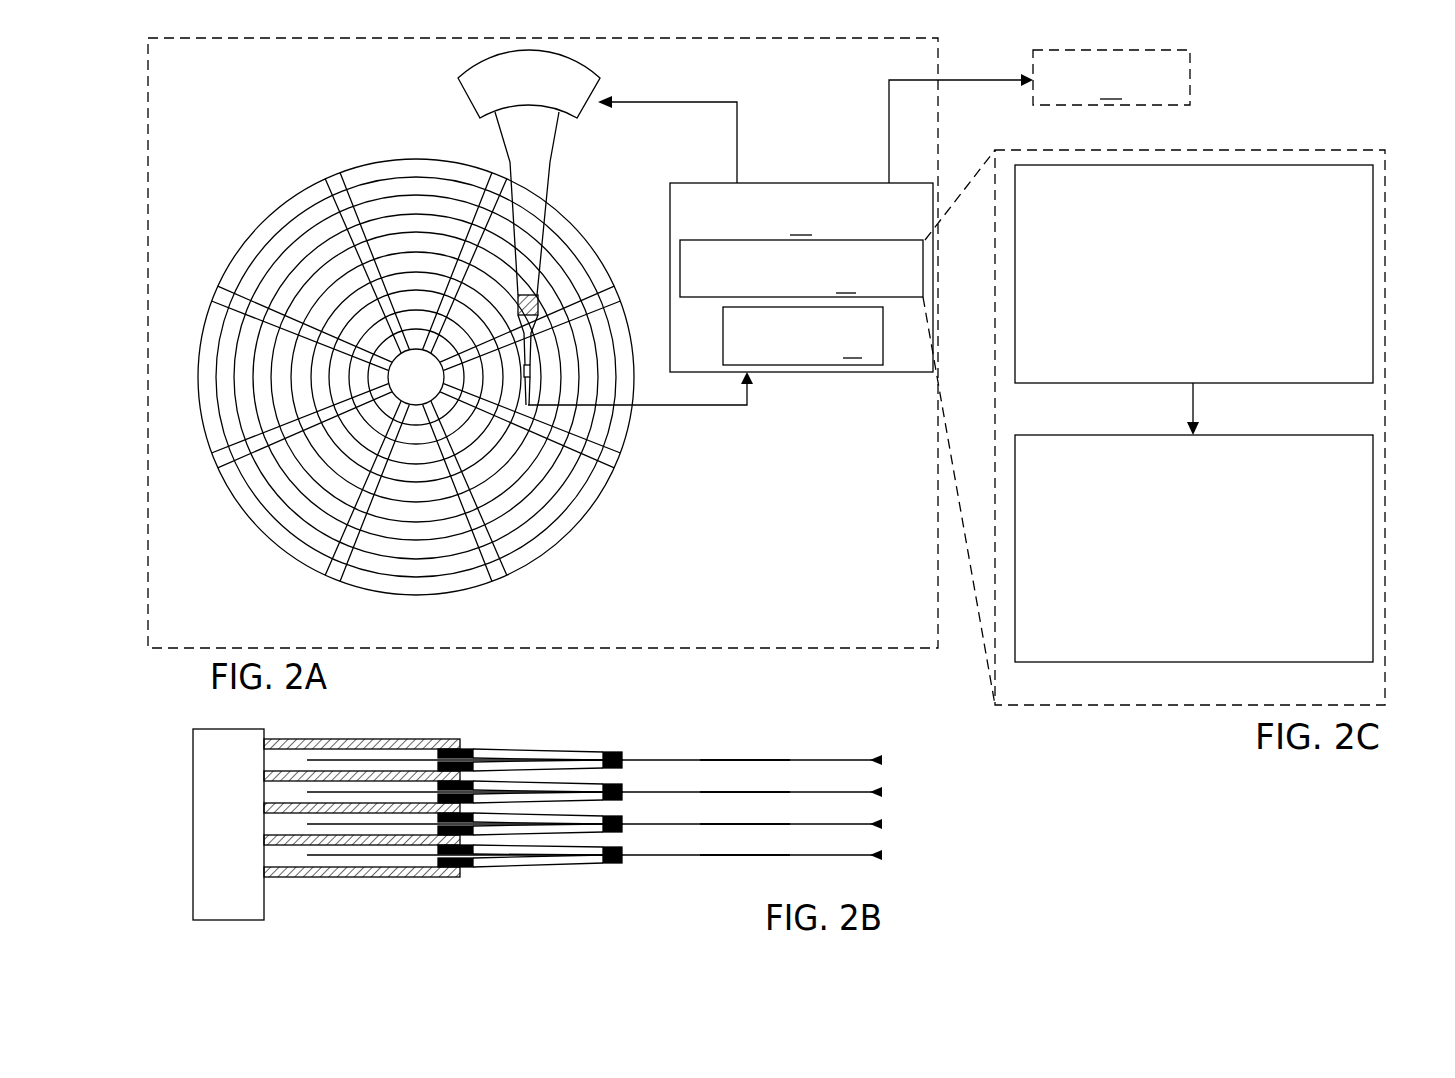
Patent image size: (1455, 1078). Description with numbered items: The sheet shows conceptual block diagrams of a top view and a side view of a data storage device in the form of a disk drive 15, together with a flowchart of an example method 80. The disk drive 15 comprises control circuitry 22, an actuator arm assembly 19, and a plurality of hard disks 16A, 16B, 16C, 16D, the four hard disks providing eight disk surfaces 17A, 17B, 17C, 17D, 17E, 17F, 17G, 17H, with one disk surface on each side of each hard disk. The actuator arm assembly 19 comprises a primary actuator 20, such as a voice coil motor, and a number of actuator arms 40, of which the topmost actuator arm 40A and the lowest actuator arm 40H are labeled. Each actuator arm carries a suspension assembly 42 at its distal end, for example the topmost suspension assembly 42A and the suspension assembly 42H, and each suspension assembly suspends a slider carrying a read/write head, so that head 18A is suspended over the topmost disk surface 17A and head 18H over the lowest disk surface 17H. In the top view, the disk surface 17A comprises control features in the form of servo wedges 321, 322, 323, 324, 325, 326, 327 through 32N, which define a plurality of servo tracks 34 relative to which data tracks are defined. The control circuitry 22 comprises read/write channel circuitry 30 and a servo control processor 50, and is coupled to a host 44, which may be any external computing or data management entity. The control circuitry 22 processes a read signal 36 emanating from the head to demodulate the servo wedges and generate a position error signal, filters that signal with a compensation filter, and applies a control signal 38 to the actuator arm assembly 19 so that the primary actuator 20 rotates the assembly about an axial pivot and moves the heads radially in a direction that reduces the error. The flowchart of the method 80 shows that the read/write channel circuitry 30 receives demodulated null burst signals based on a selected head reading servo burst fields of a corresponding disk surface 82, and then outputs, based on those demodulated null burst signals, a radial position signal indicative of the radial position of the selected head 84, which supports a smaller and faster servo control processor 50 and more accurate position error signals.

In FIG. 2A, the disk drive 15 is at (862, 653).
In FIG. 2A, the disk surface 17A is at (268, 211).
In FIG. 2B, the disk surface 17A is at (785, 757).
In FIG. 2B, the disk surface 17B is at (762, 764).
In FIG. 2B, the disk surface 17C is at (785, 789).
In FIG. 2B, the disk surface 17D is at (762, 796).
In FIG. 2B, the disk surface 17E is at (771, 821).
In FIG. 2B, the disk surface 17F is at (750, 828).
In FIG. 2B, the disk surface 17G is at (771, 852).
In FIG. 2B, the disk surface 17H is at (750, 859).
In FIG. 2B, the hard disk 16A is at (623, 760).
In FIG. 2B, the hard disk 16B is at (623, 792).
In FIG. 2B, the hard disk 16C is at (623, 824).
In FIG. 2B, the hard disk 16D is at (624, 855).
In FIG. 2A, the head 18A is at (535, 375).
In FIG. 2B, the head 18A is at (622, 750).
In FIG. 2B, the head 18H is at (624, 864).
In FIG. 2A, the actuator arm assembly 19 is at (595, 259).
In FIG. 2B, the actuator arm assembly 19 is at (491, 805).
In FIG. 2A, the primary actuator 20 is at (598, 112).
In FIG. 2B, the primary actuator 20 is at (192, 766).
In FIG. 2A, the control circuitry 22 is at (801, 277).
In FIG. 2A, the read/write channel circuitry 30 is at (801, 268).
In FIG. 2A, the servo wedge 321 is at (332, 178).
In FIG. 2A, the servo wedge 322 is at (215, 292).
In FIG. 2A, the servo wedge 323 is at (218, 464).
In FIG. 2A, the servo wedge 324 is at (338, 577).
In FIG. 2A, the servo wedge 325 is at (500, 578).
In FIG. 2A, the servo wedge 326 is at (612, 457).
In FIG. 2A, the servo wedge 327 is at (613, 294).
In FIG. 2A, the servo wedge 32N is at (490, 178).
In FIG. 2A, the servo track 34 is at (427, 186).
In FIG. 2A, the read signal 36 is at (725, 407).
In FIG. 2A, the control signal 38 is at (740, 125).
In FIG. 2B, the actuator arms 40 is at (362, 825).
In FIG. 2A, the topmost actuator arm 40A is at (549, 184).
In FIG. 2B, the topmost actuator arm 40A is at (381, 738).
In FIG. 2B, the lowest actuator arm 40H is at (375, 885).
In FIG. 2B, the suspension assembly 42 is at (539, 826).
In FIG. 2B, the topmost suspension assembly 42A is at (558, 745).
In FIG. 2B, the suspension assembly 42H is at (556, 872).
In FIG. 2A, the host 44 is at (1039, 116).
In FIG. 2A, the servo control processor 50 is at (803, 336).
In FIG. 2C, the method 80 is at (1306, 132).
In FIG. 2C, the receiving demodulated null burst signals step 82 is at (1315, 385).
In FIG. 2C, the outputting radial position signal step 84 is at (1302, 662).